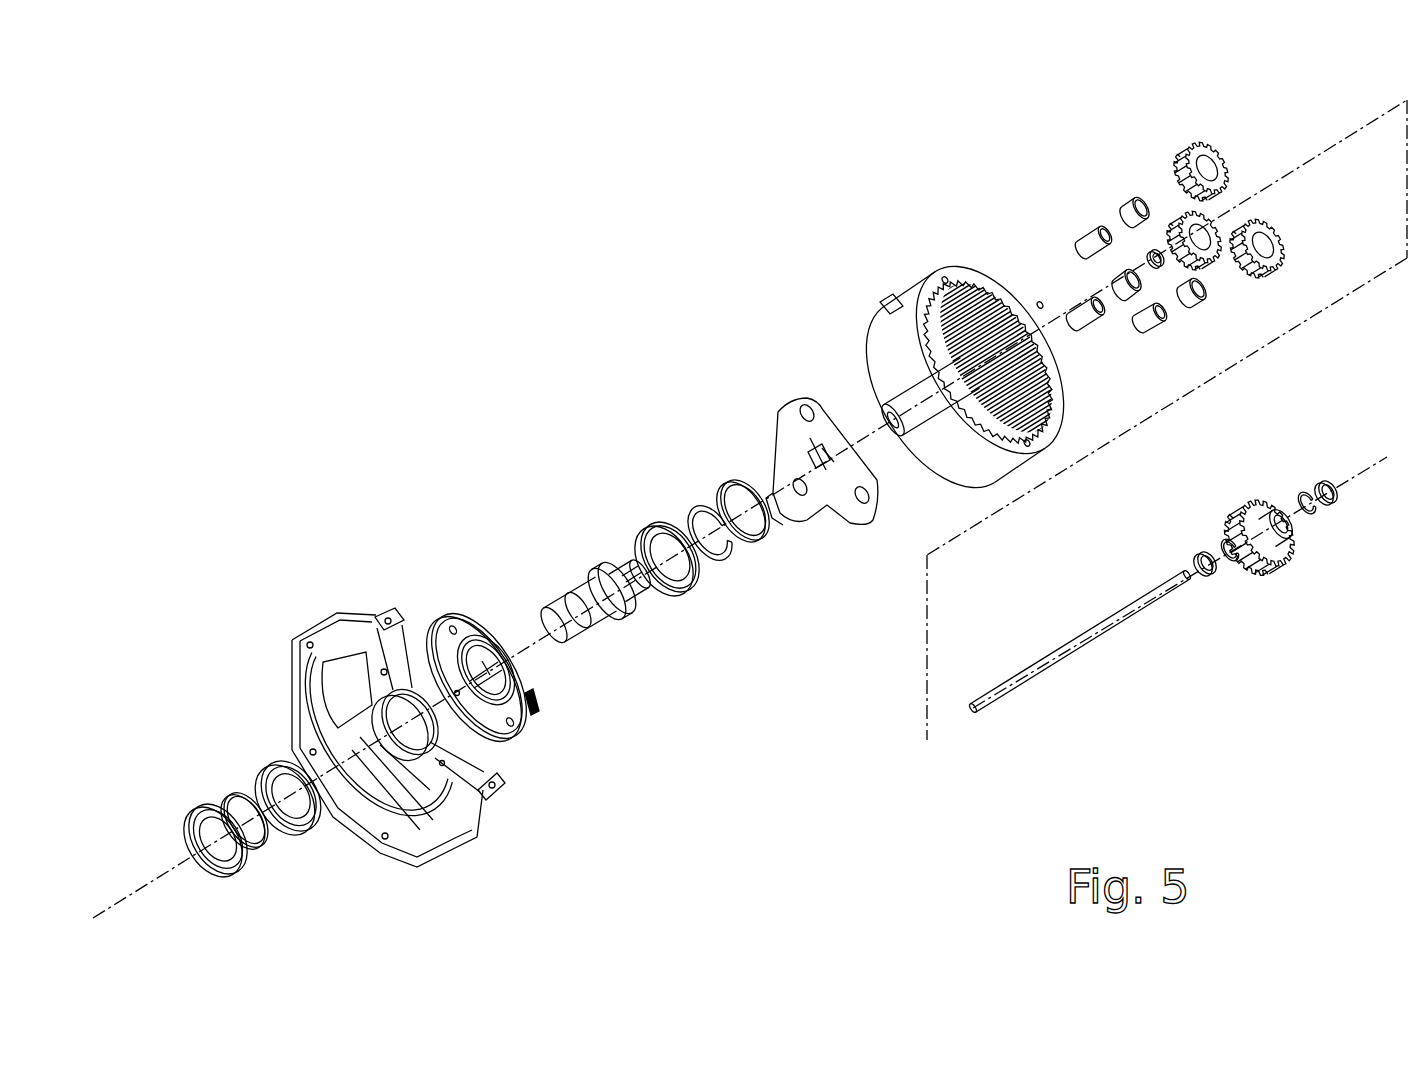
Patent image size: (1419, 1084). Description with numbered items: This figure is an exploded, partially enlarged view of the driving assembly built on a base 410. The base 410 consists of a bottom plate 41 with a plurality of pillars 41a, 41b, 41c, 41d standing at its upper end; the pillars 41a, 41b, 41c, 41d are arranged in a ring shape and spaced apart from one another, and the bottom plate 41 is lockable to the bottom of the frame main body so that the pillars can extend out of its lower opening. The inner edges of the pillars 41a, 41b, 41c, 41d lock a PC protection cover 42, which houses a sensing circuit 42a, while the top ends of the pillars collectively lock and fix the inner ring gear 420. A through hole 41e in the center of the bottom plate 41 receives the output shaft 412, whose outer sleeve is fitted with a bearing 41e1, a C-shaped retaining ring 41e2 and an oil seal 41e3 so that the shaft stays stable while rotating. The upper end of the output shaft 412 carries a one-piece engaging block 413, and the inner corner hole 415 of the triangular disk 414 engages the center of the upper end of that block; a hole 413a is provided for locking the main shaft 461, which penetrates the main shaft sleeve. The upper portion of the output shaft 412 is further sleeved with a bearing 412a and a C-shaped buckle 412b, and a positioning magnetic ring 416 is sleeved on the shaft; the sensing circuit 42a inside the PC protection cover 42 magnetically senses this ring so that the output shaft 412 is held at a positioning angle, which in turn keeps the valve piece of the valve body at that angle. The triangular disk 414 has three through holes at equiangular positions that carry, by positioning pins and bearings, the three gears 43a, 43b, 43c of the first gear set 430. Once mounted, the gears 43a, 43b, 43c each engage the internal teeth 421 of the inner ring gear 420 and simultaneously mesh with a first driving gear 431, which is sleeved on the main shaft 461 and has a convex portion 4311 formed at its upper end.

The base 410 is at (300, 604).
The bottom plate 41 is at (292, 688).
The pillar 41a is at (386, 614).
The pillar 41b is at (383, 745).
The pillar 41c is at (495, 800).
The pillar 41d is at (480, 620).
The through hole 41e is at (414, 700).
The bearing 41e1 is at (215, 868).
The C-shaped retaining ring 41e2 is at (238, 800).
The oil seal 41e3 is at (300, 830).
The PC protection cover 42 is at (525, 722).
The sensing circuit 42a is at (540, 693).
The output shaft 412 is at (588, 640).
The bearing 412a is at (660, 528).
The C-shaped buckle 412b is at (718, 565).
The engaging block 413 is at (640, 596).
The hole 413a is at (630, 566).
The triangular disk 414 is at (782, 446).
The inner corner hole 415 is at (822, 480).
The positioning magnetic ring 416 is at (722, 494).
The inner ring gear 420 is at (893, 320).
The internal teeth 421 is at (1000, 292).
The first gear set 430 is at (1238, 150).
The gear 43a is at (1190, 150).
The gear 43b is at (1212, 262).
The gear 43c is at (1288, 248).
The first driving gear 431 is at (1292, 556).
The convex portion 4311 is at (1282, 520).
The main shaft 461 is at (1112, 638).